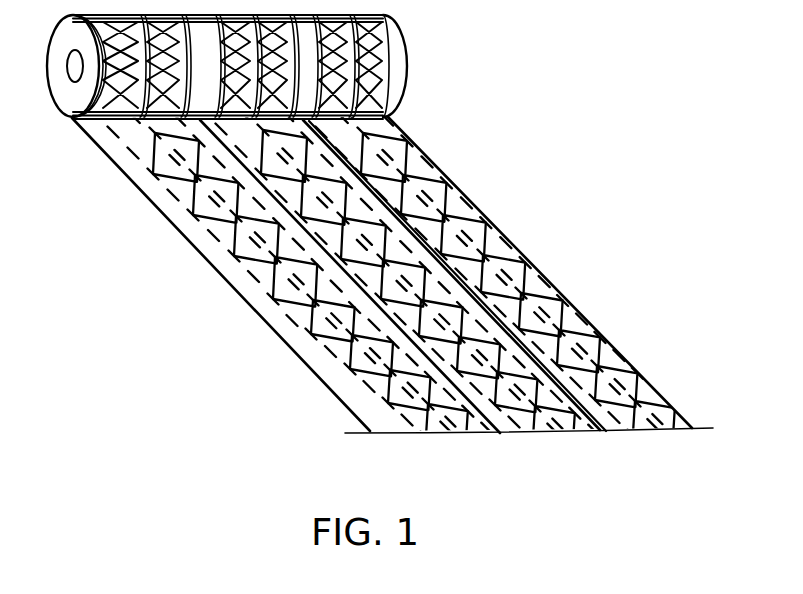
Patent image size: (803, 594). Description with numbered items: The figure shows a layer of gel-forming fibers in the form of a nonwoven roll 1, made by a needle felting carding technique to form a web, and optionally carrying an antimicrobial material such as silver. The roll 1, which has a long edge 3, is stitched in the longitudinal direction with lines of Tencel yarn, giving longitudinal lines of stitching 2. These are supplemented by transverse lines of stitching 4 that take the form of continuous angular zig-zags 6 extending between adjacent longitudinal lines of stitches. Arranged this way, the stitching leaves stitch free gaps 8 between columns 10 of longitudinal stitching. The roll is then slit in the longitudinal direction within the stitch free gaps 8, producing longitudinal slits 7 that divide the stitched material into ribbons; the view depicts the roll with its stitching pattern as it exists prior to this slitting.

The roll 1 is at (440, 63).
The longitudinal lines of stitching 2 is at (198, 178).
The long edge 3 is at (523, 253).
The transverse lines of stitching 4 is at (614, 354).
The angular zig-zag 6 is at (559, 410).
The longitudinal slits 7 is at (236, 251).
The stitch free gaps 8 is at (578, 332).
The columns of longitudinal stitching 10 is at (655, 428).